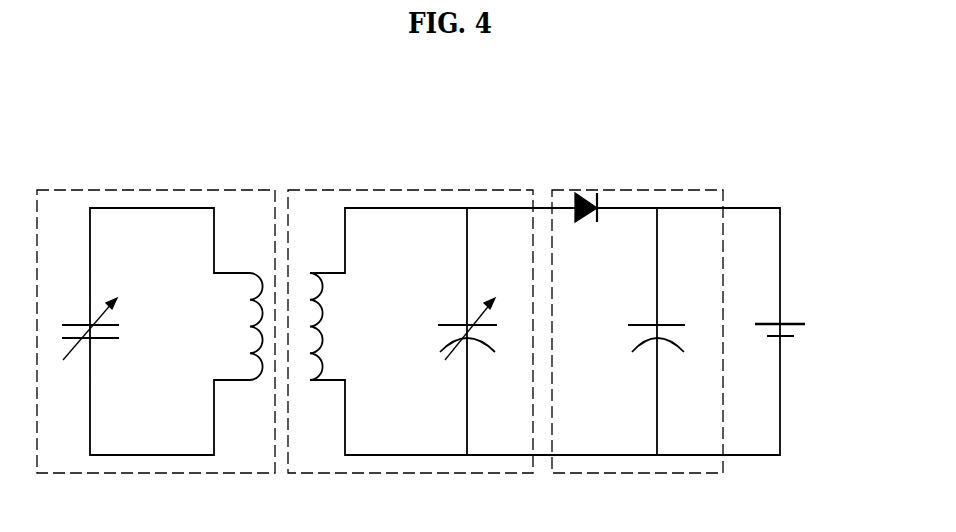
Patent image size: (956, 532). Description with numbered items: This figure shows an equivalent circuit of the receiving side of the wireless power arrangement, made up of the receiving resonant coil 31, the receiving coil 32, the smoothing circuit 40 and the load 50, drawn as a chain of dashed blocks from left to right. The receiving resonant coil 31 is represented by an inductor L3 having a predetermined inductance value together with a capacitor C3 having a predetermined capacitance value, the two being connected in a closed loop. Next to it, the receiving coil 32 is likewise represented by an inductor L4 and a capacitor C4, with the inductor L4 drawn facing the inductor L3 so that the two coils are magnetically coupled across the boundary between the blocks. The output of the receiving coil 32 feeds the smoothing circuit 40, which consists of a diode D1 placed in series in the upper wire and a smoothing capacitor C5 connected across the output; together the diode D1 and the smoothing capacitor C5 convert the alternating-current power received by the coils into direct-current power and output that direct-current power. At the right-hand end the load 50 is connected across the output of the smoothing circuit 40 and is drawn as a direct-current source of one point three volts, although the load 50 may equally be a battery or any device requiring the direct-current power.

The receiving resonant coil 31 is at (156, 297).
The receiving coil 32 is at (534, 297).
The smoothing circuit 40 is at (637, 295).
The load 50 is at (788, 312).
The capacitor C3 is at (84, 345).
The inductor L3 is at (225, 325).
The inductor L4 is at (340, 327).
The capacitor C4 is at (482, 331).
The diode D1 is at (585, 189).
The smoothing capacitor C5 is at (672, 331).